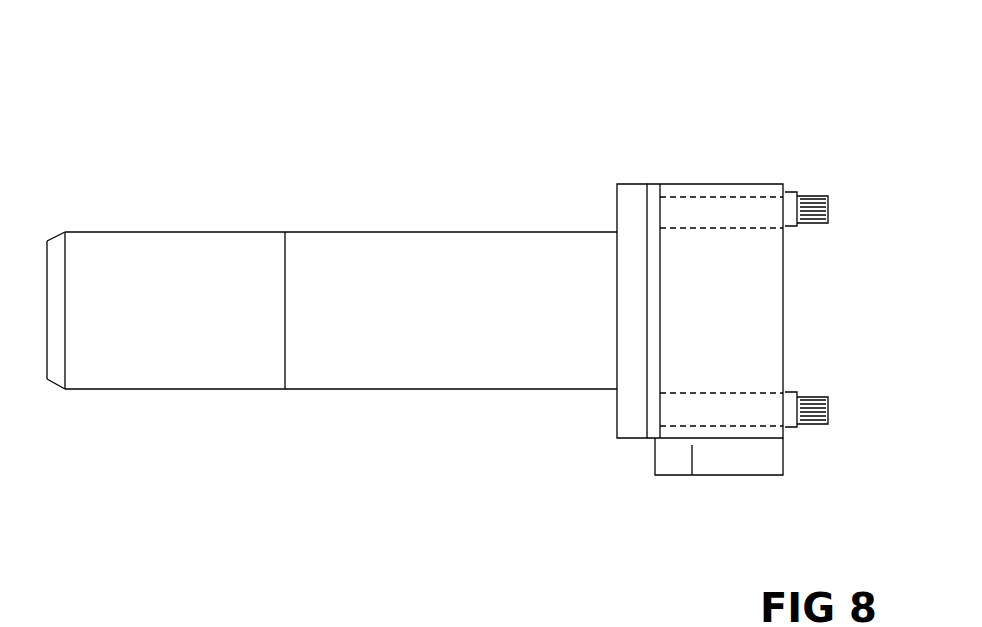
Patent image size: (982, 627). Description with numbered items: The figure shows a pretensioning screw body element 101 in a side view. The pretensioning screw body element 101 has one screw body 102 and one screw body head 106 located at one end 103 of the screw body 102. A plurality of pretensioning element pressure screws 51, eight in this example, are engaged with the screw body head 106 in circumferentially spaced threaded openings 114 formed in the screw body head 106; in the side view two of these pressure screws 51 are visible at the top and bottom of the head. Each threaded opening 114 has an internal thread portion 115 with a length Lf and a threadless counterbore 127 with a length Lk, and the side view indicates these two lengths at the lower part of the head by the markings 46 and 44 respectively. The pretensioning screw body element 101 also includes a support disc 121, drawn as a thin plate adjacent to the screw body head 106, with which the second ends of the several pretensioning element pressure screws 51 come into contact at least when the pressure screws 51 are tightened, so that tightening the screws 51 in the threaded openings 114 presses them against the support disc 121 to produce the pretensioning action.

The pretensioning screw body element 101 is at (373, 166).
The screw body 102 is at (395, 359).
The end of the screw body 103 is at (668, 256).
The screw body head 106 is at (731, 360).
The threaded openings 114 is at (762, 190).
The internal thread portion 115 is at (776, 184).
The support disc 121 is at (627, 262).
The threadless counterbore 127 is at (674, 205).
The pretensioning element pressure screws 51 is at (803, 184).
The first end 44 is at (667, 472).
The second end 46 is at (747, 478).